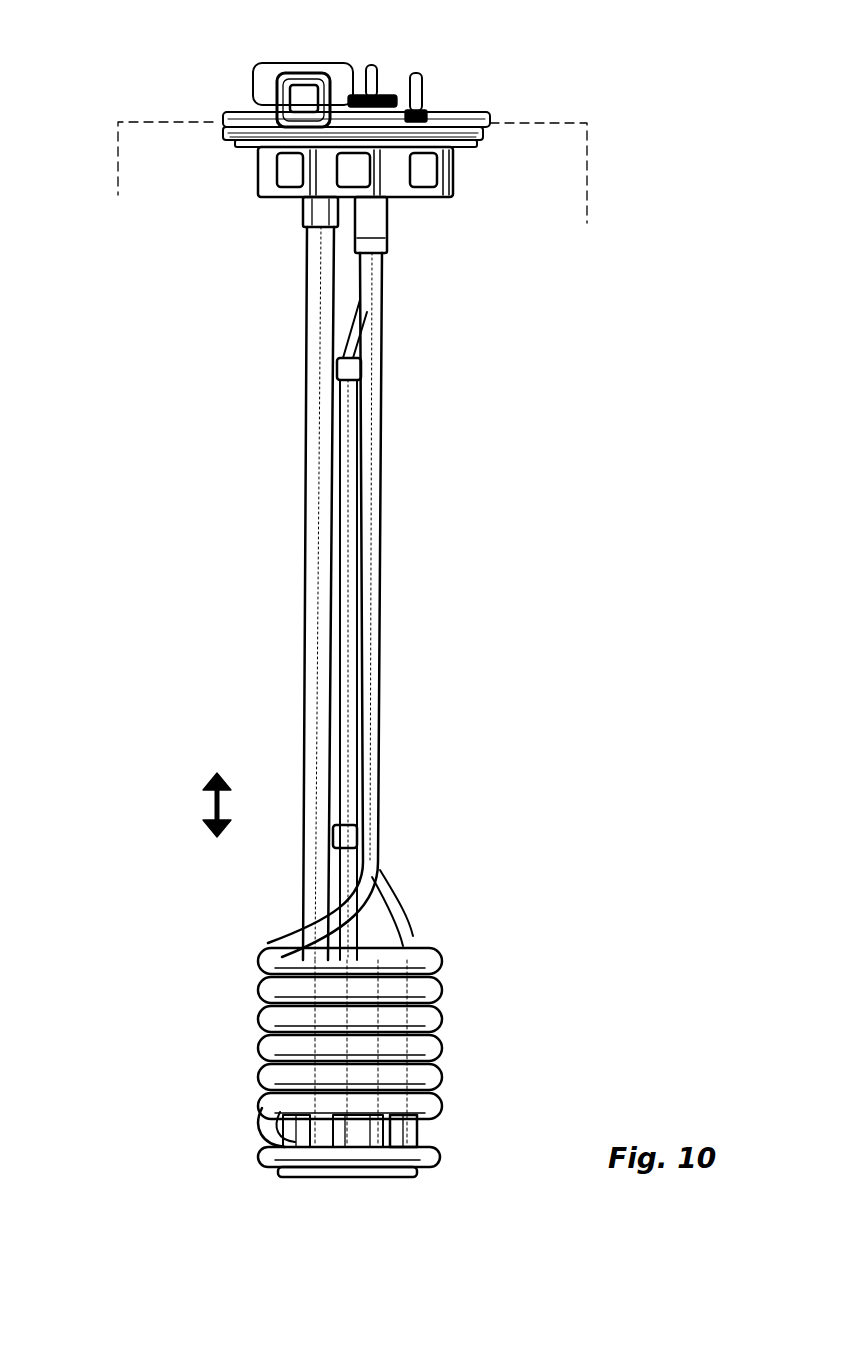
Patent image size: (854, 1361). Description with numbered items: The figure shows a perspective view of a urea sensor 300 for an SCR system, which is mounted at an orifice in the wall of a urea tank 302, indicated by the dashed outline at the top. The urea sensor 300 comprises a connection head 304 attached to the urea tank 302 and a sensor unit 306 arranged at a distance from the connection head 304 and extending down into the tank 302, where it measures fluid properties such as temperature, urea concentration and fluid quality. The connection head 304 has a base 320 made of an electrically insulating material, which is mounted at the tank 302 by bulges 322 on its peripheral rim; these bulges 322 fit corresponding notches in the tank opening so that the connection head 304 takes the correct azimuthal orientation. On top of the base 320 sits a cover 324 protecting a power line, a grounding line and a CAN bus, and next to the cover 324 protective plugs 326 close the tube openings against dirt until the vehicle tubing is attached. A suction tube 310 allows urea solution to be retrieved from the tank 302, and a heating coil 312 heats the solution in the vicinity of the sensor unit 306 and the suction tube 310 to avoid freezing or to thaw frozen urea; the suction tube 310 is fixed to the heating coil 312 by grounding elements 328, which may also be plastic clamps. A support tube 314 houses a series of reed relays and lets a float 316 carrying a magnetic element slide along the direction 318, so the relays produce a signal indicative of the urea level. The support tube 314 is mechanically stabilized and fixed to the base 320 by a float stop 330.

The urea sensor 300 is at (122, 638).
The urea tank 302 is at (548, 123).
The connection head 304 is at (236, 183).
The sensor unit 306 is at (420, 1122).
The suction tube 310 is at (390, 893).
The heating coil 312 is at (372, 732).
The support tube 314 is at (306, 563).
The float 316 is at (297, 1098).
The direction 318 is at (207, 800).
The base 320 is at (447, 116).
The bulges 322 is at (490, 117).
The cover 324 is at (256, 80).
The protective plugs 326 is at (378, 70).
The grounding elements 328 is at (362, 368).
The float stop 330 is at (300, 210).